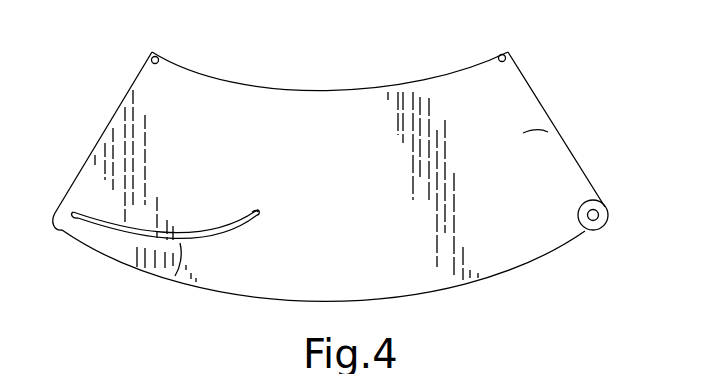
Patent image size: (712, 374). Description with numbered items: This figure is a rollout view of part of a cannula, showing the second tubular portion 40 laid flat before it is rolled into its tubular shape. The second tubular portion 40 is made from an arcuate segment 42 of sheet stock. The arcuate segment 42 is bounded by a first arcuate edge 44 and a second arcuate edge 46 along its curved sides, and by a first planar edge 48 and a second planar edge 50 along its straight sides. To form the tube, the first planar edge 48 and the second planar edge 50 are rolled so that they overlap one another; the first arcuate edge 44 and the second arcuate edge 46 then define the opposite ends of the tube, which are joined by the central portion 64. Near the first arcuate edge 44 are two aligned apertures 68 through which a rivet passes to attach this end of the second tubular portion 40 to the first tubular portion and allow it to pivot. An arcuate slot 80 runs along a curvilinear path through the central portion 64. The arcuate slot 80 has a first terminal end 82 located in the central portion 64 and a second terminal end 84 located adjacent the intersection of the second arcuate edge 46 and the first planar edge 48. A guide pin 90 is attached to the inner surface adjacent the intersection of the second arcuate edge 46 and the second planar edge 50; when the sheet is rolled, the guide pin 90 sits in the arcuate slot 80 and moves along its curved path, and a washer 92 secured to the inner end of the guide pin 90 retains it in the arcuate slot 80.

The second tubular portion 40 is at (345, 181).
The arcuate segment 42 is at (523, 133).
The first arcuate edge 44 is at (305, 90).
The second arcuate edge 46 is at (243, 293).
The first planar edge 48 is at (88, 155).
The second planar edge 50 is at (535, 86).
The central portion 64 is at (350, 155).
The apertures 68 is at (156, 52).
The arcuate slot 80 is at (175, 276).
The first terminal end 82 is at (259, 211).
The second terminal end 84 is at (62, 228).
The guide pin 90 is at (585, 233).
The washer 92 is at (603, 200).